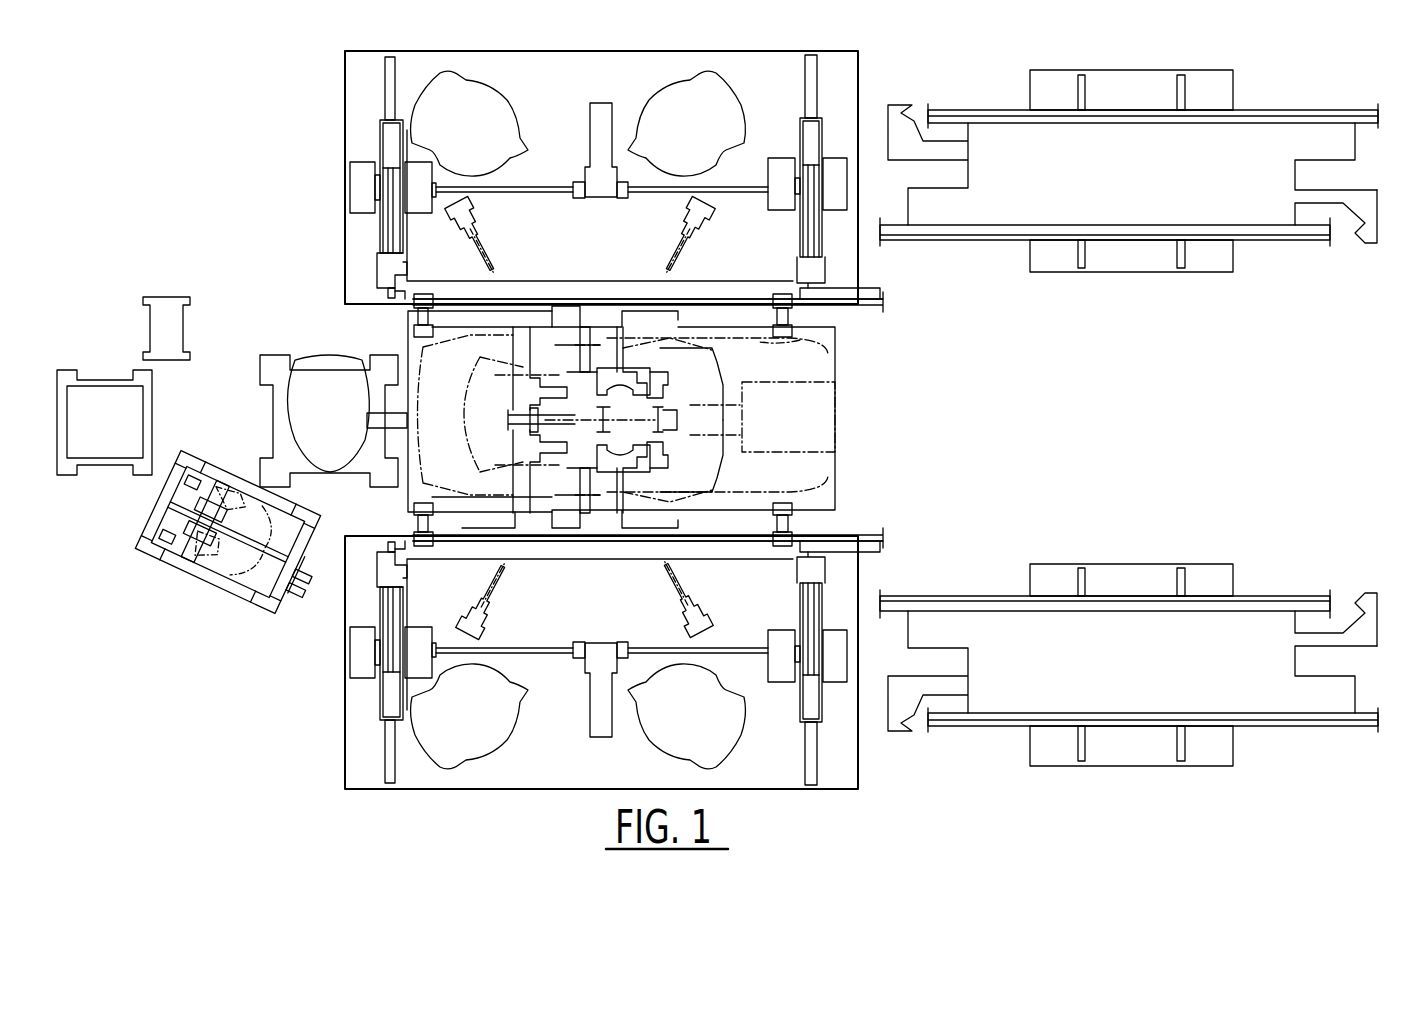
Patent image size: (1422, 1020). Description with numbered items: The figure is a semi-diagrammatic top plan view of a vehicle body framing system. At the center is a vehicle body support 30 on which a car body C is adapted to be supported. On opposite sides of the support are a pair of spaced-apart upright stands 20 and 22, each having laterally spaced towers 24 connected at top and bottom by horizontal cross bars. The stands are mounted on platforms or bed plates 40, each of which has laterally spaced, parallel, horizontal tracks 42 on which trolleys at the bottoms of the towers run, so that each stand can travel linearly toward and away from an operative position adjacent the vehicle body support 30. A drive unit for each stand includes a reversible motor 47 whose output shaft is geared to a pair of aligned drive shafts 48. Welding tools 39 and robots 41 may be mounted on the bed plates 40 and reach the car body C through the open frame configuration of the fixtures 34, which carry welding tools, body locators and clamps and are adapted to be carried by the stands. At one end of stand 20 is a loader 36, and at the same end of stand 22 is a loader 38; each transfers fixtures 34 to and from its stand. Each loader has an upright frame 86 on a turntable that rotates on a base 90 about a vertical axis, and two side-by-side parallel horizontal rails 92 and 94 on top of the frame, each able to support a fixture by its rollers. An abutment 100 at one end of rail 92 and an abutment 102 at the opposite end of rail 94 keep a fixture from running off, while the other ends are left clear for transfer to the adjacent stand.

The upright stand 20 is at (360, 610).
The upright stand 22 is at (370, 236).
The towers 24 is at (380, 130).
The vehicle body support 30 is at (700, 372).
The fixtures 34 is at (435, 307).
The loader 36 is at (1268, 590).
The loader 38 is at (1144, 185).
The welding tools 39 is at (490, 240).
The bed plates 40 is at (345, 75).
The robots 41 is at (480, 132).
The tracks 42 is at (398, 72).
The reversible motor 47 is at (603, 103).
The drive shafts 48 is at (548, 186).
The upright frame 86 is at (1336, 156).
The base 90 is at (1131, 171).
The rail 92 is at (1153, 116).
The rail 94 is at (1105, 232).
The abutment 100 is at (928, 165).
The abutment 102 is at (1336, 216).
The car body C is at (832, 468).